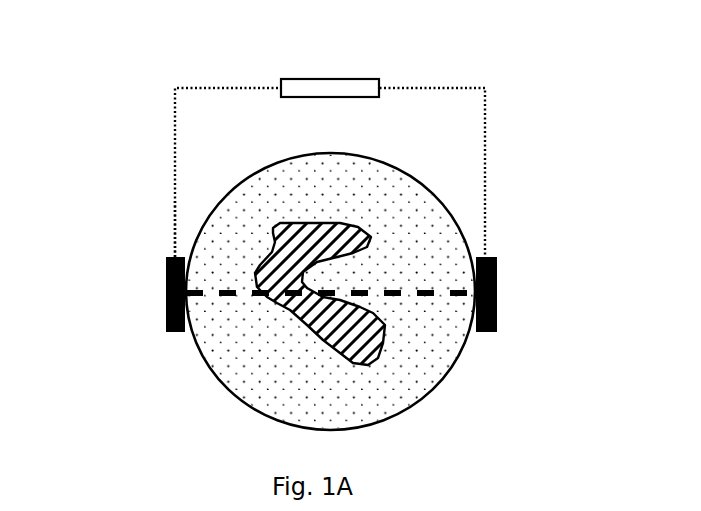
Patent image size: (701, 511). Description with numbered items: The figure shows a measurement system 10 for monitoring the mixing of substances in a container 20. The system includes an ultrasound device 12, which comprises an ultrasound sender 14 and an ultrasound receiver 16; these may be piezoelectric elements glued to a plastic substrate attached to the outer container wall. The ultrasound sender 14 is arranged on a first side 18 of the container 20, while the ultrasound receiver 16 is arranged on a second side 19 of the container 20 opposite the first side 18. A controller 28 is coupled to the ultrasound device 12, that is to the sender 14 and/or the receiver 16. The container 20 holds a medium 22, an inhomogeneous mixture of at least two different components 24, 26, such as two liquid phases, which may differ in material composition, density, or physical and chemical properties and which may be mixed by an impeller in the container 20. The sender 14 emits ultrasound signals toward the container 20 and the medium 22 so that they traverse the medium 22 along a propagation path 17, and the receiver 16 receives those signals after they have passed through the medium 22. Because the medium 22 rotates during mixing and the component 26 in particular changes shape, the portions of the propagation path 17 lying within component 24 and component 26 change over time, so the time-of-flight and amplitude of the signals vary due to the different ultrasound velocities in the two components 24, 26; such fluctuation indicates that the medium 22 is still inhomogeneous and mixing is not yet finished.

The measurement system 10 is at (570, 129).
The ultrasound device 12 is at (150, 308).
The ultrasound sender 14 is at (165, 278).
The ultrasound receiver 16 is at (497, 285).
The propagation path 17 is at (230, 298).
The first side 18 is at (157, 248).
The second side 19 is at (488, 345).
The container 20 is at (400, 415).
The medium 22 is at (402, 385).
The first component 24 is at (448, 231).
The second component 26 is at (347, 238).
The controller 28 is at (402, 75).